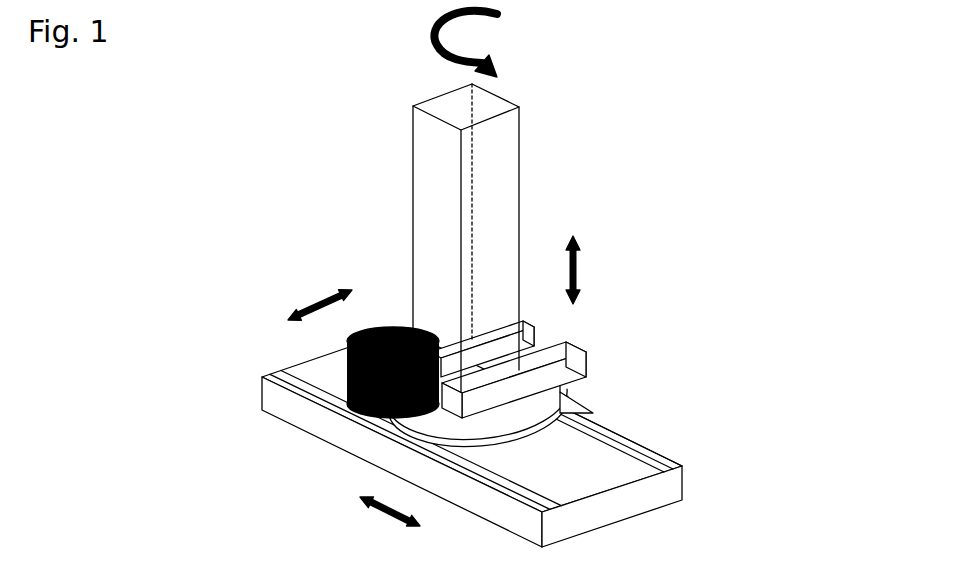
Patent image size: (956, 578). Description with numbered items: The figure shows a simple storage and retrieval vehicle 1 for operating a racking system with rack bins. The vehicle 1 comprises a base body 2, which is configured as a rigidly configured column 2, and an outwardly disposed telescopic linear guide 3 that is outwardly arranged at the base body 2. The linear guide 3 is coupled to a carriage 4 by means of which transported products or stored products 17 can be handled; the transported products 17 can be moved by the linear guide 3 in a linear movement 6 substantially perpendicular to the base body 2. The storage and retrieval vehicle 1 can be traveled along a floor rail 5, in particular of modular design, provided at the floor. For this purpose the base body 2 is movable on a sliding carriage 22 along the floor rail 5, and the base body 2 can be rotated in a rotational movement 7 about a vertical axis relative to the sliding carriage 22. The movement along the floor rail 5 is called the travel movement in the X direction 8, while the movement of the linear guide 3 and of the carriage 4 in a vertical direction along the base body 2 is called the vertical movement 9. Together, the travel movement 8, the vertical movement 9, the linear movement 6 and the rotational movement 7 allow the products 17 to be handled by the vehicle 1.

The storage and retrieval vehicle 1 is at (869, 115).
The base body 2 is at (565, 224).
The telescopic linear guide 3 is at (619, 349).
The carriage 4 is at (383, 440).
The floor rail 5 is at (545, 438).
The linear movement 6 is at (320, 294).
The rotary movement 7 is at (478, 40).
The travel movement in the X direction 8 is at (390, 527).
The vertical movement 9 is at (588, 270).
The transported products 17 is at (265, 372).
The sliding carriage 22 is at (588, 395).